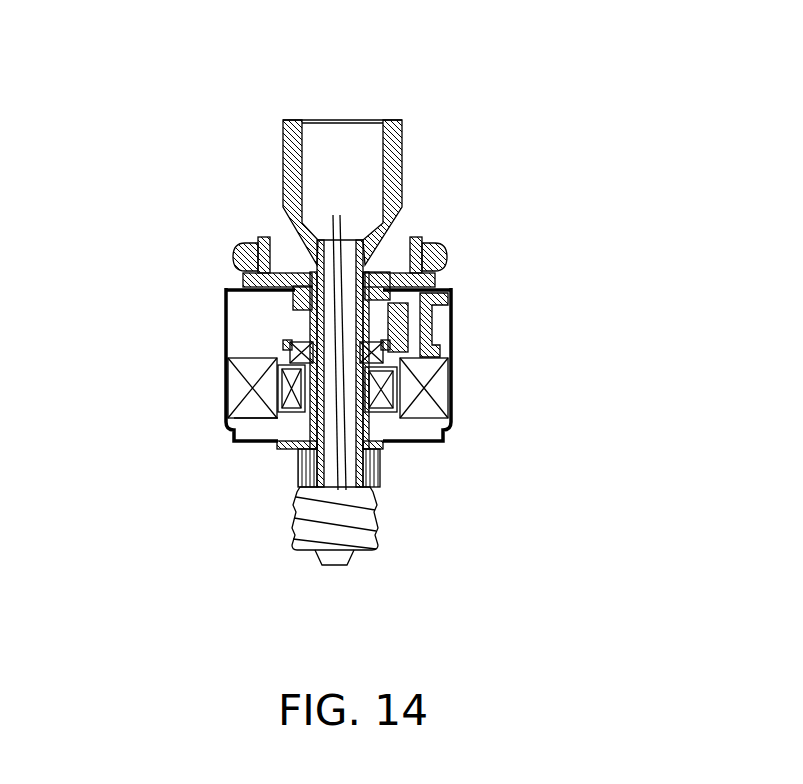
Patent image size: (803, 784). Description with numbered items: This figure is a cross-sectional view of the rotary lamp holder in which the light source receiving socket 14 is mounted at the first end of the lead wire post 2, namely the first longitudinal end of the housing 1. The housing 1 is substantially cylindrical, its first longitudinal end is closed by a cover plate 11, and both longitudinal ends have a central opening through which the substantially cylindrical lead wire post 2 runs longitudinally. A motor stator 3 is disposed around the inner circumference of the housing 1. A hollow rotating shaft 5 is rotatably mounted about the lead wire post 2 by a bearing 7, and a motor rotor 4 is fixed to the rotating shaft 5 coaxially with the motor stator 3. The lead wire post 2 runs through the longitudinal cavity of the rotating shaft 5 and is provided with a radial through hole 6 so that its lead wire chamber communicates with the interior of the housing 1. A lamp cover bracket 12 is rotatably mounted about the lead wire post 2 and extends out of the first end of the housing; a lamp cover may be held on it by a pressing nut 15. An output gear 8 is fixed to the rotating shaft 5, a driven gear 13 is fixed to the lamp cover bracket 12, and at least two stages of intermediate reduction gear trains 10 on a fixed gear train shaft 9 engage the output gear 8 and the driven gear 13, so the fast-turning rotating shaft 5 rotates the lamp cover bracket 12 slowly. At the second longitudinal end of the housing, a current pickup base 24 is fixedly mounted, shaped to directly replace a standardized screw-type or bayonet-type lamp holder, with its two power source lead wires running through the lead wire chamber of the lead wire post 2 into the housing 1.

The housing 1 is at (227, 287).
The lead wire post 2 is at (310, 325).
The motor stator 3 is at (248, 372).
The motor rotor 4 is at (262, 392).
The rotating shaft 5 is at (272, 415).
The radial through hole 6 is at (350, 425).
The bearing 7 is at (437, 433).
The output gear 8 is at (445, 393).
The gear train shaft 9 is at (417, 327).
The intermediate reduction gear trains 10 is at (447, 287).
The cover plate 11 is at (443, 247).
The lamp cover bracket 12 is at (418, 243).
The driven gear 13 is at (388, 285).
The light source receiving socket 14 is at (287, 120).
The pressing nut 15 is at (243, 245).
The current pickup base 24 is at (337, 523).